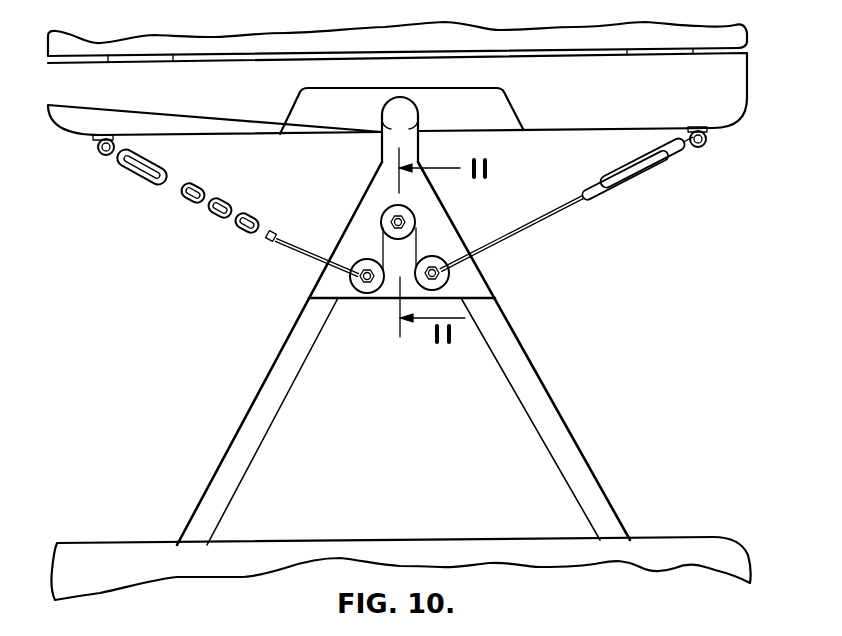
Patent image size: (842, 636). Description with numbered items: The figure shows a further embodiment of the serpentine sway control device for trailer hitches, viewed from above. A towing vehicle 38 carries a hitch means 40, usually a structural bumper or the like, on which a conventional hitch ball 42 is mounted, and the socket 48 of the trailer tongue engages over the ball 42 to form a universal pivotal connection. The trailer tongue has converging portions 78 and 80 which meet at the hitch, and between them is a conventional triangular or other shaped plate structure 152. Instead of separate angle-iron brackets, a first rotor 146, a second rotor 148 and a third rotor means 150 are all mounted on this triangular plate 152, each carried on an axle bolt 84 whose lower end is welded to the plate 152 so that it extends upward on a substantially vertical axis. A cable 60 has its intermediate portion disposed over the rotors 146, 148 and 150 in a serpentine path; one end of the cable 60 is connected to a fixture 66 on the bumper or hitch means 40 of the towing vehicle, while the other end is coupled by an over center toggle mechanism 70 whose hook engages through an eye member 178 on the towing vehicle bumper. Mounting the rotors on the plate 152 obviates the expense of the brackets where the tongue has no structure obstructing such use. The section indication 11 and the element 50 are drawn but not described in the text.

The towing vehicle 38 is at (530, 34).
The hitch means 40 is at (628, 93).
The hitch ball 42 is at (385, 132).
The socket 48 is at (418, 112).
The triangular plate structure 152 is at (367, 201).
The axle bolt 84 is at (362, 272).
The third rotor means 150 is at (417, 218).
The second rotor 148 is at (442, 260).
The first rotor 146 is at (370, 290).
The fixture 66 is at (103, 153).
The cable 60 is at (556, 222).
The over center toggle mechanism 70 is at (647, 163).
The eye member 178 is at (707, 143).
The converging portion of trailer tongue 78 is at (270, 377).
The converging portion of trailer tongue 80 is at (532, 366).
The base board 50 is at (424, 541).
The section line 11- 11 is at (442, 245).